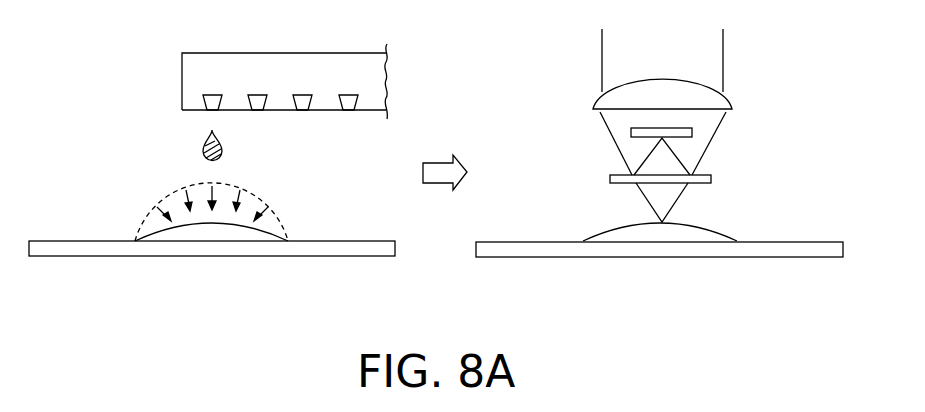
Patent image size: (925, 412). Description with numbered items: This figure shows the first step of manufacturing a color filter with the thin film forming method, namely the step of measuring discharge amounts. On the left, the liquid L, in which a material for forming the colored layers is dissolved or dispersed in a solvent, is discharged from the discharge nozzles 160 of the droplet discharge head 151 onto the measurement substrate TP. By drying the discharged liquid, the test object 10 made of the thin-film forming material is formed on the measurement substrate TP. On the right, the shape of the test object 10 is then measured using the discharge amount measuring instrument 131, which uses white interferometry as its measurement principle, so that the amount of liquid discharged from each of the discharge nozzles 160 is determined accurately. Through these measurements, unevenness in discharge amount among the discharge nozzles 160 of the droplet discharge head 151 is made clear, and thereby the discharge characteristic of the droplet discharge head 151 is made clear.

The droplet discharge head 151 is at (323, 62).
The discharge nozzles 160 is at (207, 103).
The liquid L is at (201, 150).
The test object 10 is at (265, 236).
The measurement substrate TP is at (108, 250).
The discharge amount measuring instrument 131 is at (752, 105).